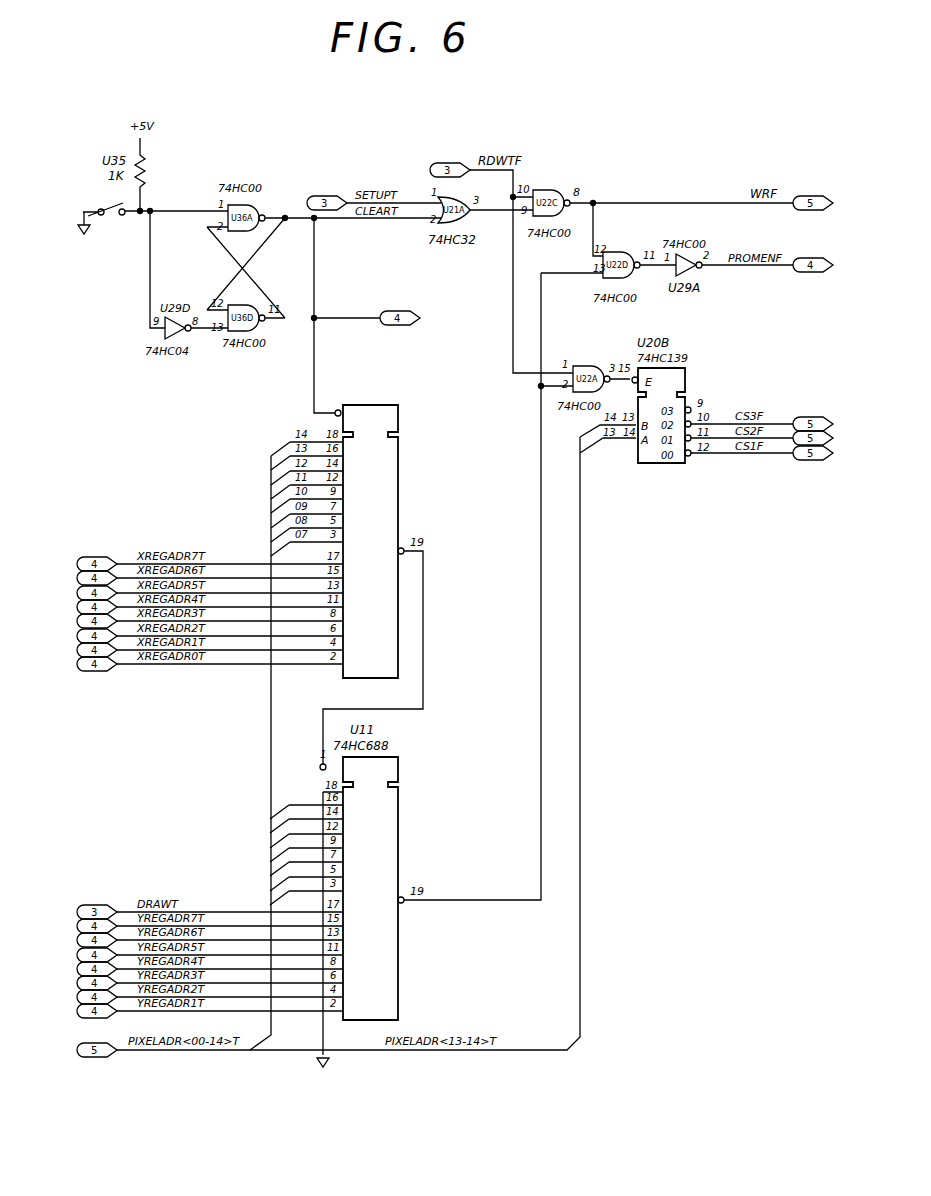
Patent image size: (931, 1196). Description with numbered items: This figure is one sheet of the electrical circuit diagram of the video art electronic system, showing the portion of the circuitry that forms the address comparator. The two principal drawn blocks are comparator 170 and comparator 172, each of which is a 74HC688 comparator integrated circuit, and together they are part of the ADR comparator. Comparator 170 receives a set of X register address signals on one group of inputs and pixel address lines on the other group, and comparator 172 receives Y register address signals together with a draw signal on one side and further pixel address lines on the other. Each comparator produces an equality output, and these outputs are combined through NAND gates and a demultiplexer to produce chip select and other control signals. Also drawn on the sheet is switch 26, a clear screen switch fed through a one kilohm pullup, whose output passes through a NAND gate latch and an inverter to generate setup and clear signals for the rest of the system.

The clear screen switch 26 is at (96, 224).
The comparator 170 is at (398, 457).
The comparator 172 is at (396, 806).